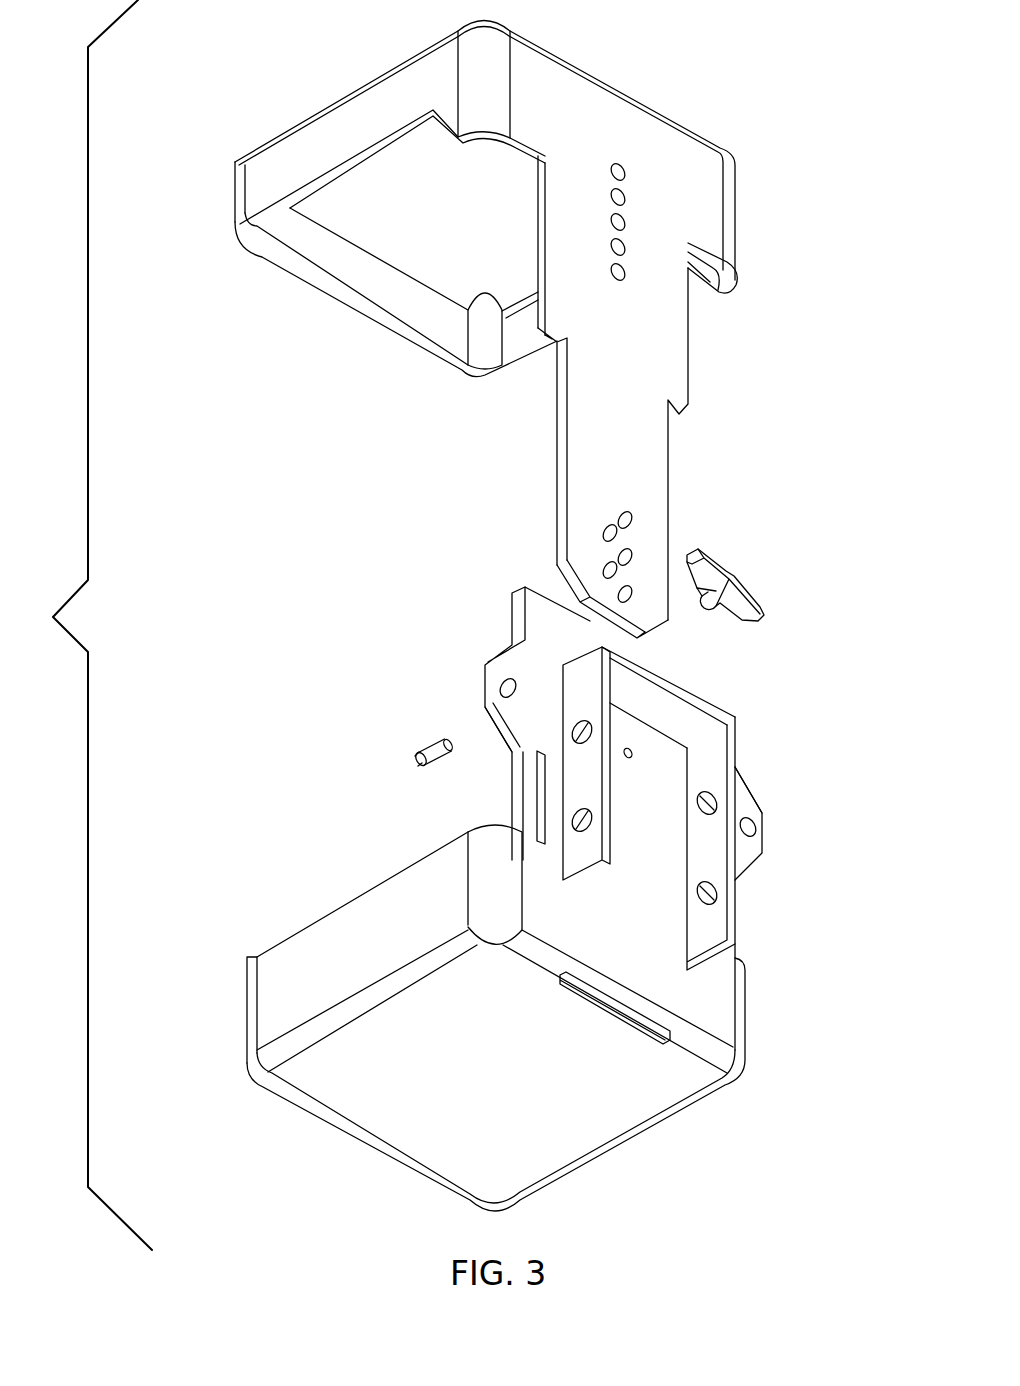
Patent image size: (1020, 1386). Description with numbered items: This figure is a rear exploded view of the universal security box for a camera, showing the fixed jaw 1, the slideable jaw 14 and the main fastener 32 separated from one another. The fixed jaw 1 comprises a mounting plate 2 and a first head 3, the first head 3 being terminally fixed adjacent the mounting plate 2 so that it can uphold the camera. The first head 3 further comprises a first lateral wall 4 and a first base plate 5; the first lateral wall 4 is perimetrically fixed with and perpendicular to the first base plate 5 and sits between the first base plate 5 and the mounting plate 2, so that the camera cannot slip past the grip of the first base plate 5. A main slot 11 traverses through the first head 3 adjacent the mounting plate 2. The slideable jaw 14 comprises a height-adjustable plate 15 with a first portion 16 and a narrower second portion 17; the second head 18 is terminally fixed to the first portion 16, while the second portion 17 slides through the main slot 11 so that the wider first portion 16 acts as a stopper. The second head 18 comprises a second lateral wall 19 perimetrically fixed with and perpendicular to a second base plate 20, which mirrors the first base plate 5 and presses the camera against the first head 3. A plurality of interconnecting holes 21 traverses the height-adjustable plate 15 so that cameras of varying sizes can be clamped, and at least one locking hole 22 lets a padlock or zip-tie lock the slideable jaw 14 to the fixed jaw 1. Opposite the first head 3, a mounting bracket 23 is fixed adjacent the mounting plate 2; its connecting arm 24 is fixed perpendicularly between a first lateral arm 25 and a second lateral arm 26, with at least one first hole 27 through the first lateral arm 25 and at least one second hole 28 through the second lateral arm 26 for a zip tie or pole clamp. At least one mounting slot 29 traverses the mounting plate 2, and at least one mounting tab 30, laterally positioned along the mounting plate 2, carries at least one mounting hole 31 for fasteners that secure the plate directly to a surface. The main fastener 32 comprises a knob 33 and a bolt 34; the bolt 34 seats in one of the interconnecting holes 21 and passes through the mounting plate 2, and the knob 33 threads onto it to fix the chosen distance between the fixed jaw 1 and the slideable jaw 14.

The fixed jaw 1 is at (222, 978).
The mounting plate 2 is at (737, 715).
The first head 3 is at (240, 961).
The first lateral wall 4 is at (302, 935).
The first base plate 5 is at (285, 1085).
The main slot 11 is at (621, 1030).
The slideable jaw 14 is at (203, 206).
The height-adjustable plate 15 is at (704, 300).
The first portion 16 is at (690, 347).
The second portion 17 is at (560, 400).
The second head 18 is at (273, 266).
The second lateral wall 19 is at (363, 312).
The second base plate 20 is at (378, 183).
The plurality of interconnecting holes 21 is at (611, 167).
The at least one locking hole 22 is at (620, 514).
The mounting bracket 23 is at (748, 745).
The connecting arm 24 is at (688, 695).
The first lateral arm 25 is at (693, 853).
The second lateral arm 26 is at (567, 690).
The at least one first hole 27 is at (698, 802).
The at least one second hole 28 is at (584, 722).
The at least one mounting slot 29 is at (542, 822).
The at least one mounting tab 30 is at (498, 728).
The at least one mounting hole 31 is at (500, 688).
The main fastener 32 is at (758, 565).
The knob 33 is at (722, 580).
The bolt 34 is at (450, 748).